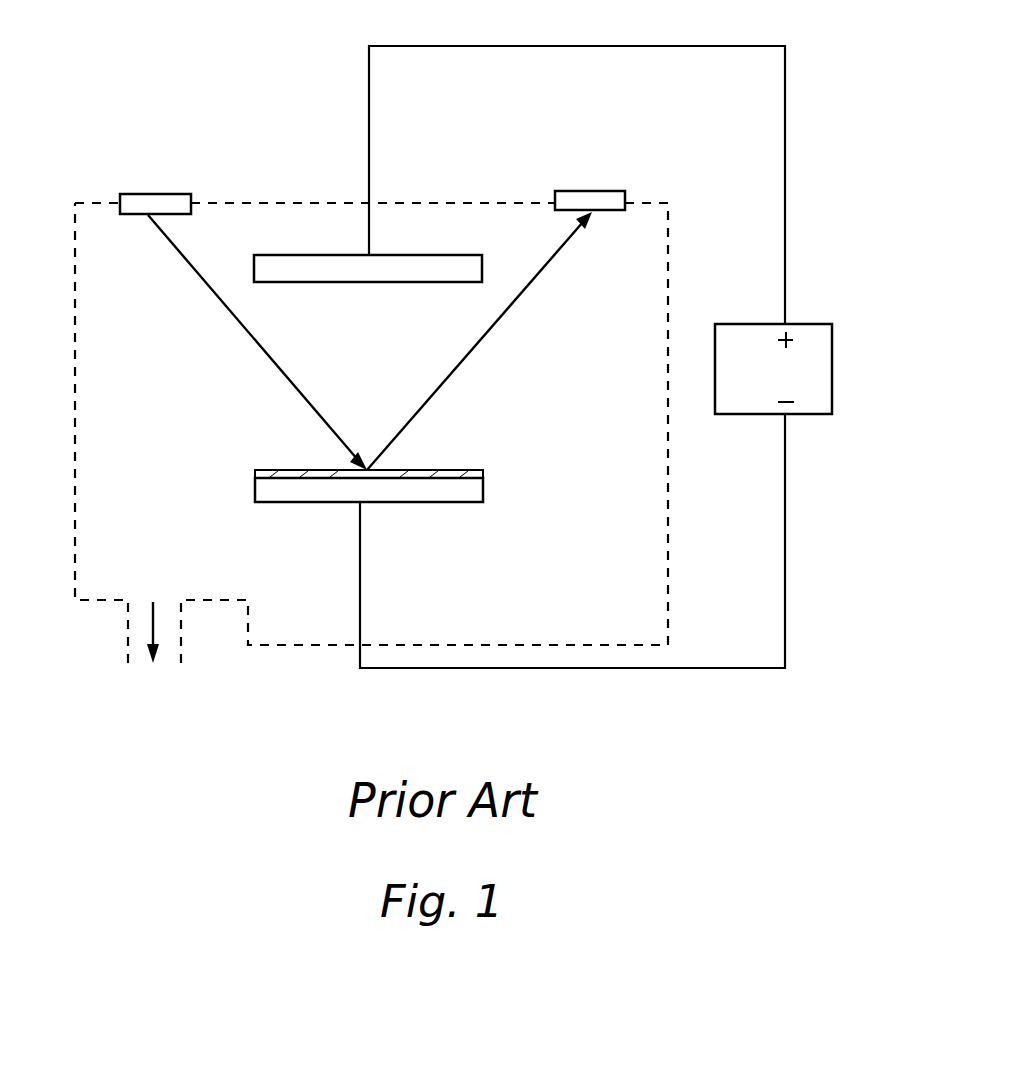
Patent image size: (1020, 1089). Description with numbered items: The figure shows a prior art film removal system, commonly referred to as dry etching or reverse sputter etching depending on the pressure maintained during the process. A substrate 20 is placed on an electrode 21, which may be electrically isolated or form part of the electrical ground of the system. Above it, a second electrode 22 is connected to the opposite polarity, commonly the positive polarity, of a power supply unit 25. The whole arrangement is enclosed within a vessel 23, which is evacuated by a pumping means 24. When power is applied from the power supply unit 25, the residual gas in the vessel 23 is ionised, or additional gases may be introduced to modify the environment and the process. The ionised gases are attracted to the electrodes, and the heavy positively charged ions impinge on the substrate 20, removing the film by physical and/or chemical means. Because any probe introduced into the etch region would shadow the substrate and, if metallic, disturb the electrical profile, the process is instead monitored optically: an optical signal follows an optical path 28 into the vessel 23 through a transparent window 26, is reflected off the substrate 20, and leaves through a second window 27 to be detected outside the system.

The substrate 20 is at (468, 471).
The electrode 21 is at (470, 493).
The second electrode 22 is at (435, 265).
The vessel 23 is at (317, 200).
The pumping means 24 is at (163, 667).
The power supply unit 25 is at (822, 362).
The window 26 is at (166, 202).
The window 27 is at (576, 197).
The optical path 28 is at (525, 292).